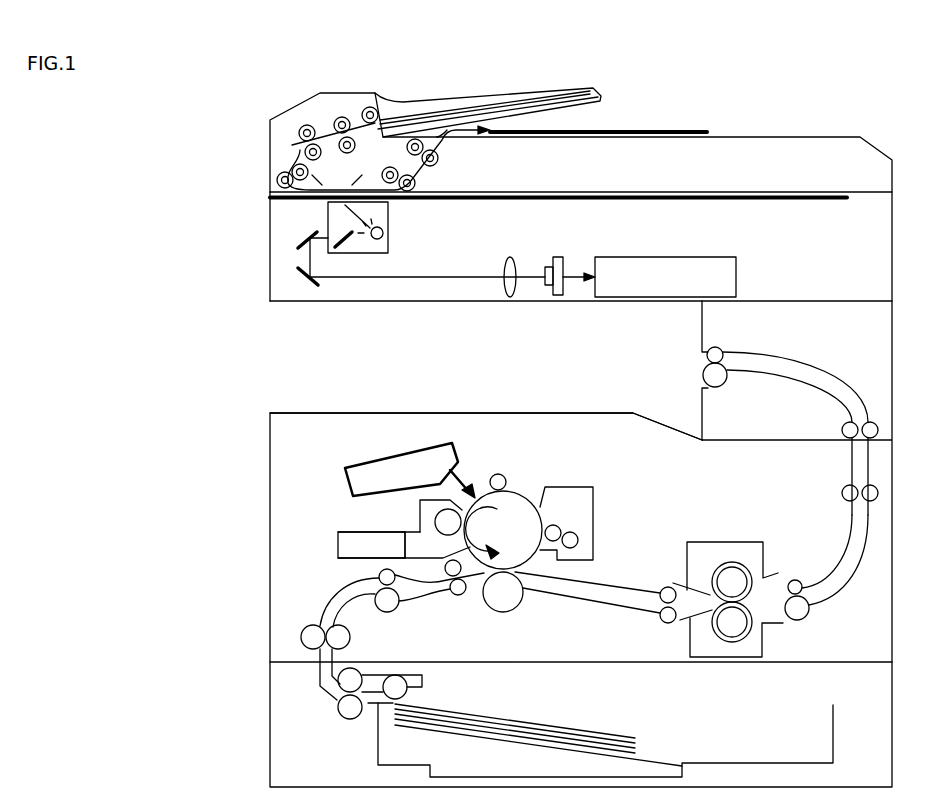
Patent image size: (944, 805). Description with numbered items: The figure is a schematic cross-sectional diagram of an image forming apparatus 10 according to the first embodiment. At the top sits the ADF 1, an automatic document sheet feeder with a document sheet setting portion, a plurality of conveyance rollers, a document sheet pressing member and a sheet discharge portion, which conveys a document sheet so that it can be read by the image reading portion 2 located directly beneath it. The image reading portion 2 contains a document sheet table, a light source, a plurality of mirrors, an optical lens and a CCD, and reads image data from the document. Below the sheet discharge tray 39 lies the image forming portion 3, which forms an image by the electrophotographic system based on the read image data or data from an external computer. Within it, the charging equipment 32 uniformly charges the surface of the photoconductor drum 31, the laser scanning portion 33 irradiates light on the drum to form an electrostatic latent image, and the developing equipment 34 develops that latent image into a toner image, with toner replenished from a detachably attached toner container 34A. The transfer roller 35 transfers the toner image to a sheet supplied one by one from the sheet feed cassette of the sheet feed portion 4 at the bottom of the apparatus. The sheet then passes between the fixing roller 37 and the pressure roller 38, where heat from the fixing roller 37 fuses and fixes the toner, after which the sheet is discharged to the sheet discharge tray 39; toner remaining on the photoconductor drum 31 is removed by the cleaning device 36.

The image forming apparatus 10 is at (258, 57).
The ADF 1 is at (270, 143).
The image reading portion 2 is at (270, 260).
The image forming portion 3 is at (292, 462).
The sheet feed portion 4 is at (270, 728).
The sheet discharge tray 39 is at (602, 413).
The photoconductor drum 31 is at (527, 494).
The charging equipment 32 is at (492, 476).
The laser scanning portion 33 is at (347, 490).
The developing equipment 34 is at (418, 510).
The toner container 34A is at (335, 552).
The transfer roller 35 is at (505, 613).
The cleaning device 36 is at (570, 487).
The fixing roller 37 is at (735, 562).
The pressure roller 38 is at (733, 660).